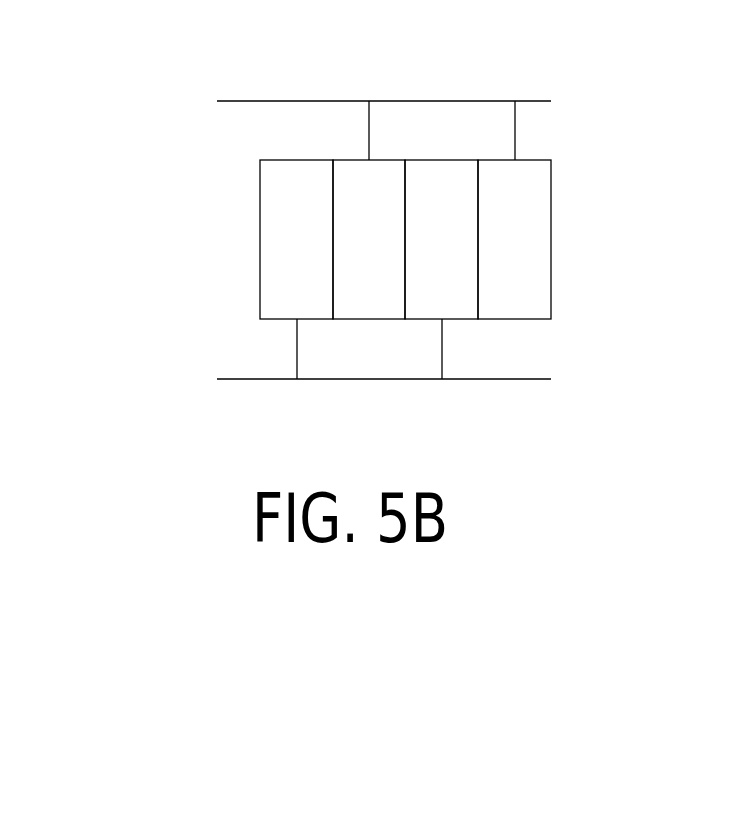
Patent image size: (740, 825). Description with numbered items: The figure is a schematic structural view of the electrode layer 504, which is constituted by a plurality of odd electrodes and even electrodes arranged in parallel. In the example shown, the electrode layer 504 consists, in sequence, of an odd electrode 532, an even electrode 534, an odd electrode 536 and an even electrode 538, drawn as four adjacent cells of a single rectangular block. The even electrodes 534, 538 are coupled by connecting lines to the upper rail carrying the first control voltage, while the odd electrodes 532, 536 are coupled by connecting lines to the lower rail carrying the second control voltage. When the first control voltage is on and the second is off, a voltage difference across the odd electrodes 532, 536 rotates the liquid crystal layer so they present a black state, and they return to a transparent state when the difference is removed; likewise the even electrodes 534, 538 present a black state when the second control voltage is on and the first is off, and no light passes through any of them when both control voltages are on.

The electrode layer 504 is at (341, 201).
The odd electrode 532 is at (273, 195).
The even electrode 534 is at (348, 268).
The odd electrode 536 is at (463, 267).
The even electrode 538 is at (538, 193).